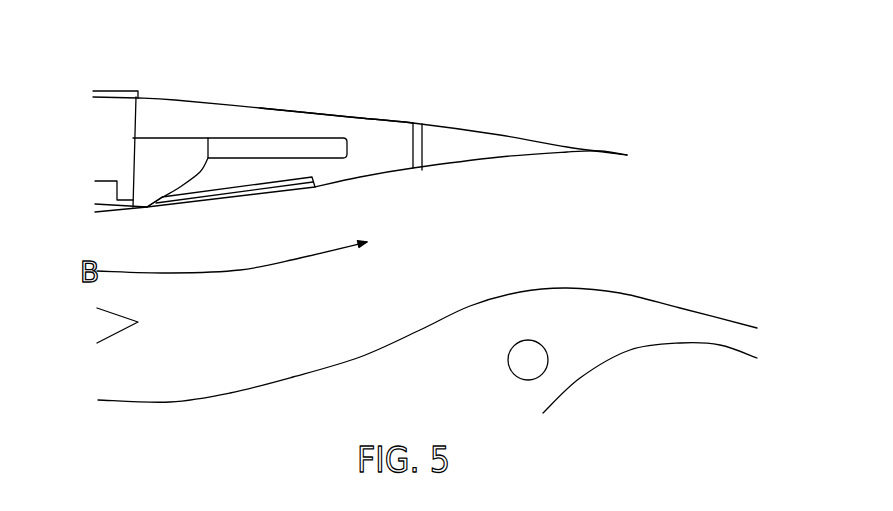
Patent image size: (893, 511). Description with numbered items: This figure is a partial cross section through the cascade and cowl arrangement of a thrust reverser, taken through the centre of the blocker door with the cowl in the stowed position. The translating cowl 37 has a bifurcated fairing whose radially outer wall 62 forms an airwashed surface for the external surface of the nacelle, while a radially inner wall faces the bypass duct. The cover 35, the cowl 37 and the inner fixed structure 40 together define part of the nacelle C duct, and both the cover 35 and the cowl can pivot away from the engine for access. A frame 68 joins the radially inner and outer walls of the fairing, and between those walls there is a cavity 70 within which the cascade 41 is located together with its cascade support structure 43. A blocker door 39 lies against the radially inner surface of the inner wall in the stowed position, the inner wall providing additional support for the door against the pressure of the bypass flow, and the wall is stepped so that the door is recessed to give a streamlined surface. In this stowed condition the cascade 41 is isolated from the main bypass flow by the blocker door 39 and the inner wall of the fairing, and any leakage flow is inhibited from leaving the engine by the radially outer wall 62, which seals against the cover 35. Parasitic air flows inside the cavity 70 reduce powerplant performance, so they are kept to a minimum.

The cover 35 is at (102, 72).
The translating cowl 37 is at (345, 80).
The blocker door 39 is at (280, 193).
The inner fixed structure 40 is at (373, 350).
The cascade 41 is at (267, 147).
The cascade support structure 43 is at (155, 138).
The radially outer wall 62 is at (373, 115).
The frame 68 is at (425, 143).
The cavity 70 is at (277, 131).